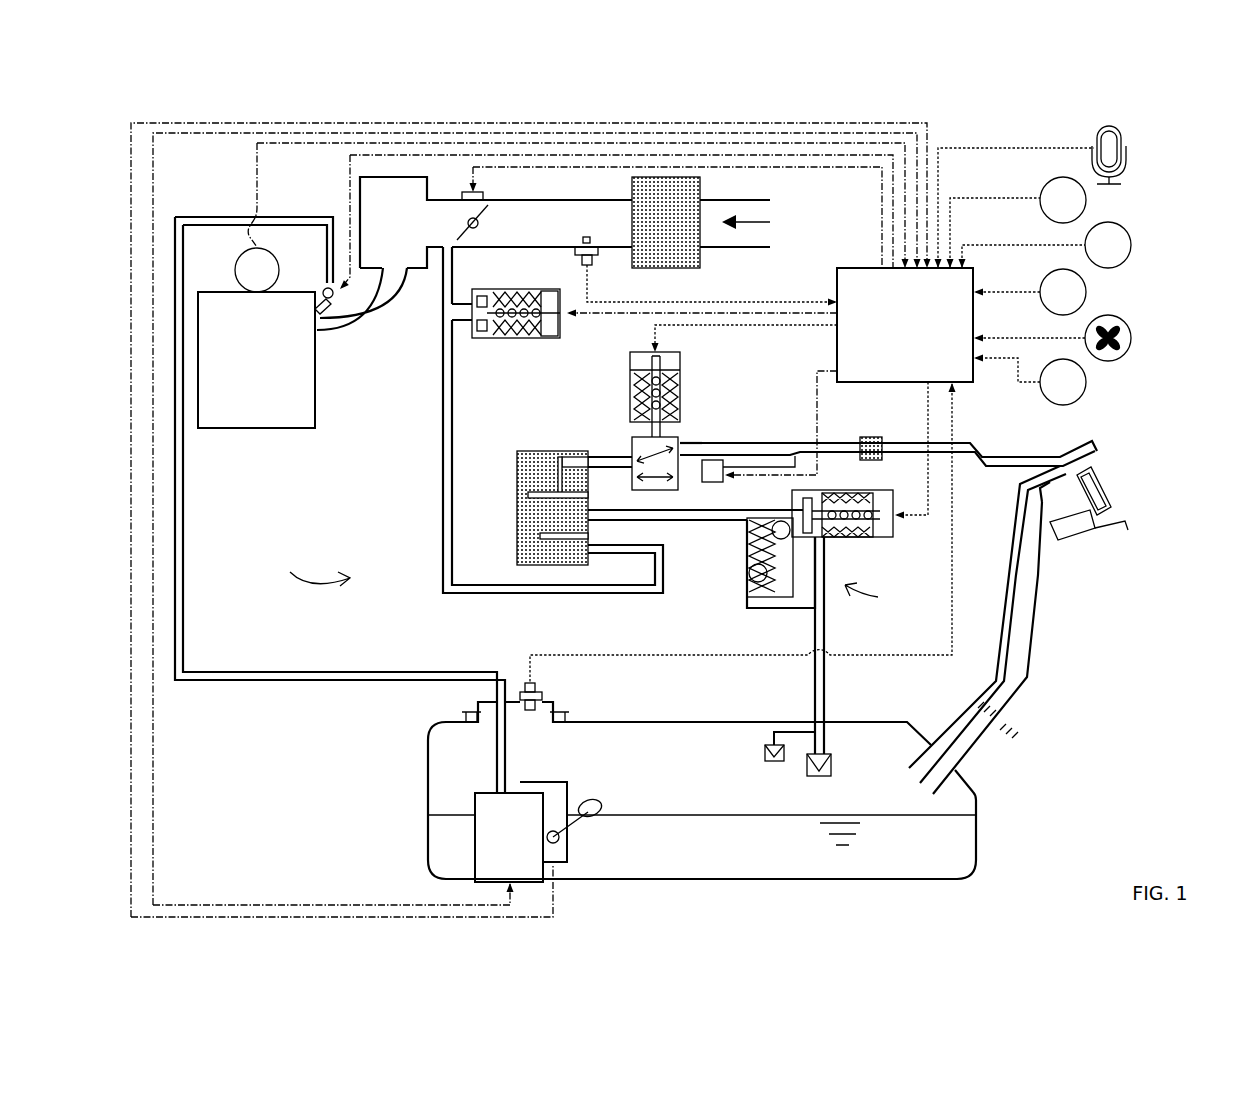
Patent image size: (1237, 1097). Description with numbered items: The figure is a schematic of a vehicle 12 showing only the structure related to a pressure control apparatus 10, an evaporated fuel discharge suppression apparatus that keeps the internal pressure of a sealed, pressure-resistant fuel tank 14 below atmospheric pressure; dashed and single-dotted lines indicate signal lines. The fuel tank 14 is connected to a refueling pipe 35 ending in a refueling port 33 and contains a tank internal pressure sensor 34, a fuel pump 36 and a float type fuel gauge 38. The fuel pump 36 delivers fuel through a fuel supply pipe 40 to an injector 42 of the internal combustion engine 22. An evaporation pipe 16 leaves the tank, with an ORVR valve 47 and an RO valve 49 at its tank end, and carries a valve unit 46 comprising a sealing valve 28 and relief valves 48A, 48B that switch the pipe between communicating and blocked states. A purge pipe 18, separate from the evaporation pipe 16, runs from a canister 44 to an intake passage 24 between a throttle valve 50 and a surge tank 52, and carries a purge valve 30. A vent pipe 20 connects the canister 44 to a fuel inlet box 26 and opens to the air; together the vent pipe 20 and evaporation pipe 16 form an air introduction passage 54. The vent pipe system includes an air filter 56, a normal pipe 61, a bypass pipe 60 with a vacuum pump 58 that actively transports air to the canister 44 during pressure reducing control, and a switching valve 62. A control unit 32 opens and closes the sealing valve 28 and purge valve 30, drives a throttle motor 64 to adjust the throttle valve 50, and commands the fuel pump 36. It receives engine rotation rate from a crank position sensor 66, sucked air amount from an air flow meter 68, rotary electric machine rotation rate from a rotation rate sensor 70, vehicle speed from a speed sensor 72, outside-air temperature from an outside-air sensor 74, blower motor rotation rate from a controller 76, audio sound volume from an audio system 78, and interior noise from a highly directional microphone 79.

The pressure control apparatus 10 is at (306, 567).
The vehicle 12 is at (1003, 127).
The fuel tank 14 is at (978, 836).
The evaporation pipe 16 is at (868, 645).
The purge pipe 18 is at (440, 447).
The vent pipe 20 is at (631, 452).
The internal combustion engine 22 is at (262, 431).
The intake passage 24 is at (735, 263).
The fuel inlet box 26 is at (1088, 541).
The sealing valve 28 is at (866, 539).
The purge valve 30 is at (508, 340).
The control unit 32 is at (966, 385).
The refueling port 33 is at (1108, 488).
The tank internal pressure sensor 34 is at (541, 685).
The refueling pipe 35 is at (1033, 683).
The fuel pump 36 is at (488, 792).
The fuel gauge 38 is at (557, 782).
The fuel supply pipe 40 is at (325, 670).
The injector 42 is at (322, 288).
The canister 44 is at (516, 509).
The valve unit 46 is at (875, 597).
The ORVR valve 47 is at (832, 776).
The relief valve 48A is at (747, 548).
The relief valve 48B is at (757, 578).
The RO valve 49 is at (768, 762).
The throttle valve 50 is at (478, 229).
The surge tank 52 is at (407, 272).
The air introduction passage 54 is at (826, 672).
The air filter 56 is at (873, 438).
The vacuum pump 58 is at (702, 485).
The bypass pipe 60 is at (739, 462).
The normal pipe 61 is at (692, 447).
The switching valve 62 is at (680, 362).
The throttle motor 64 is at (487, 197).
The crank position sensor 66 is at (237, 253).
The air flow meter 68 is at (594, 262).
The rotation rate sensor 70 is at (1087, 293).
The speed sensor 72 is at (1131, 249).
The outside-air sensor 74 is at (1087, 201).
The controller of air-conditioning blower motor 76 is at (1132, 339).
The audio system 78 is at (1088, 383).
The highly directional microphone 79 is at (1127, 158).